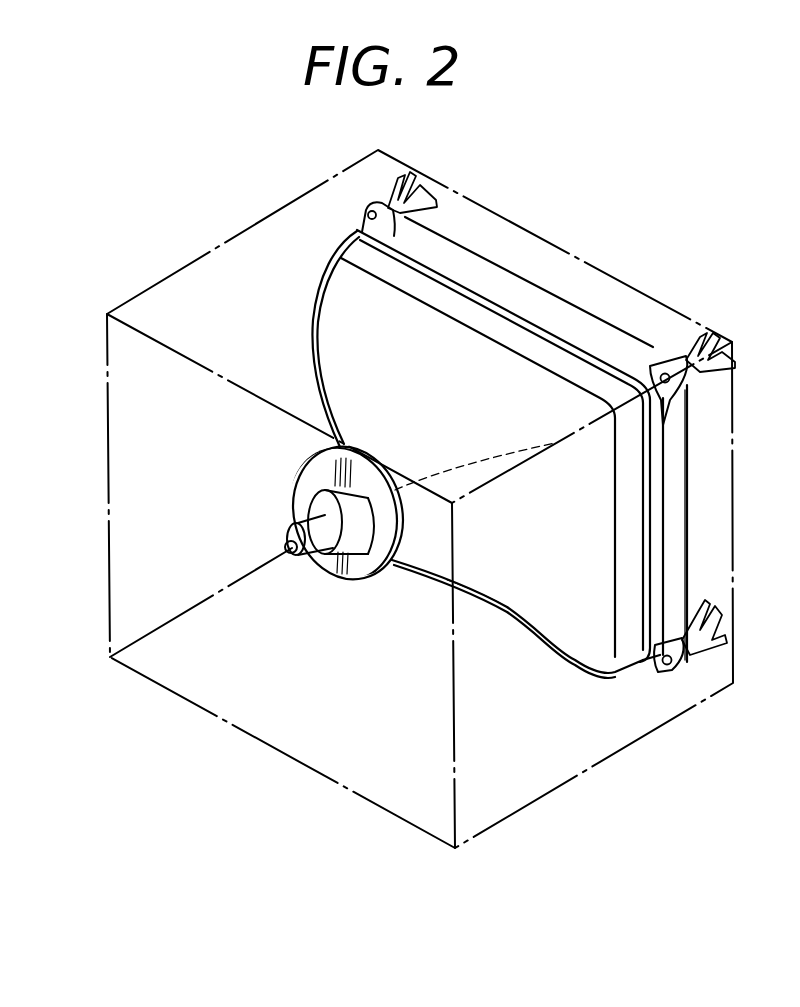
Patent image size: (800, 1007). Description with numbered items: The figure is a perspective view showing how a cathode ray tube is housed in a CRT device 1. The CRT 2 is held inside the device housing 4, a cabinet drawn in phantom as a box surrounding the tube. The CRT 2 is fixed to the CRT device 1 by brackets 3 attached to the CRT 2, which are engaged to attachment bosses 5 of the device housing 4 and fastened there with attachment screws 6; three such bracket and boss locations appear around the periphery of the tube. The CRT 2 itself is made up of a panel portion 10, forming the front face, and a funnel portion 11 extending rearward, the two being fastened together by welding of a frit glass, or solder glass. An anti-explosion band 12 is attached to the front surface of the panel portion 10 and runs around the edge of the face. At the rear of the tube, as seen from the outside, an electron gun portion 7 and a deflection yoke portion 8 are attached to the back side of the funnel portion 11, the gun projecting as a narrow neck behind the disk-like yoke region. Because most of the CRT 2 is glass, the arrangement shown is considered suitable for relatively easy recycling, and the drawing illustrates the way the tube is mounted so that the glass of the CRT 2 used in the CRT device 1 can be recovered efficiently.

The CRT device 1 is at (593, 264).
The CRT 2 is at (563, 653).
The brackets 3 is at (367, 212).
The device housing 4 is at (392, 795).
The attachment bosses 5 is at (412, 195).
The attachment screws 6 is at (365, 218).
The electron gun portion 7 is at (322, 558).
The deflection yoke portion 8 is at (362, 548).
The panel portion 10 is at (677, 490).
The funnel portion 11 is at (502, 587).
The anti-explosion band 12 is at (655, 562).